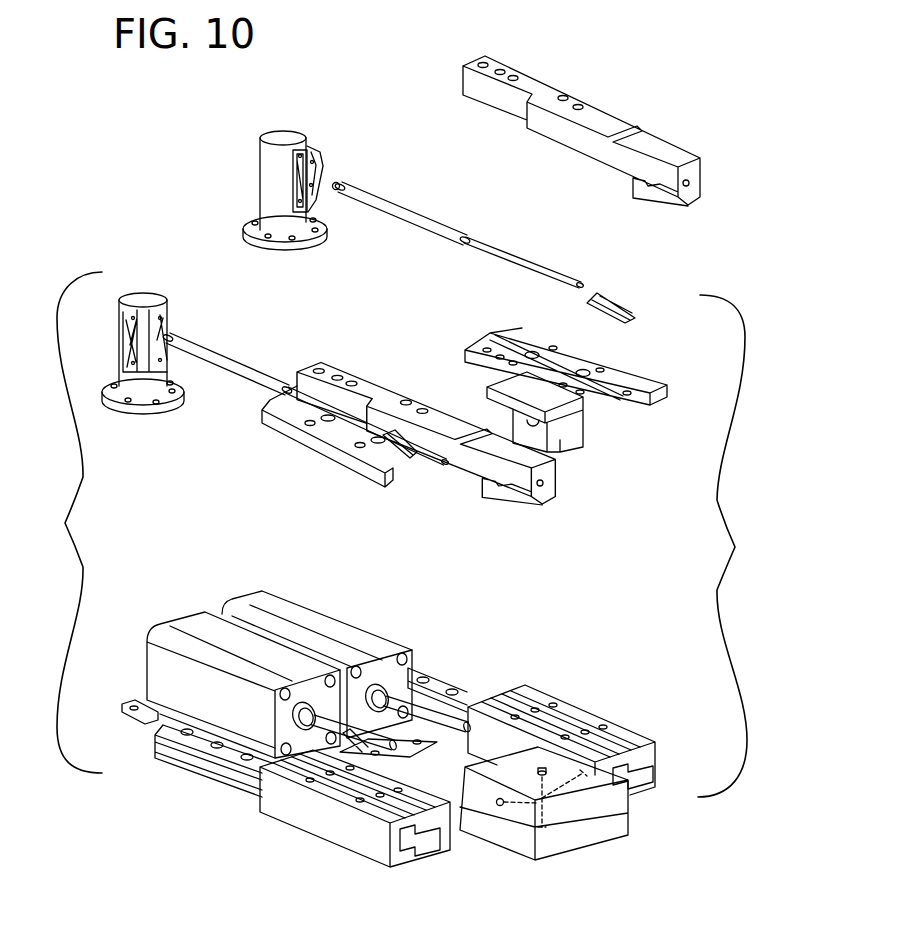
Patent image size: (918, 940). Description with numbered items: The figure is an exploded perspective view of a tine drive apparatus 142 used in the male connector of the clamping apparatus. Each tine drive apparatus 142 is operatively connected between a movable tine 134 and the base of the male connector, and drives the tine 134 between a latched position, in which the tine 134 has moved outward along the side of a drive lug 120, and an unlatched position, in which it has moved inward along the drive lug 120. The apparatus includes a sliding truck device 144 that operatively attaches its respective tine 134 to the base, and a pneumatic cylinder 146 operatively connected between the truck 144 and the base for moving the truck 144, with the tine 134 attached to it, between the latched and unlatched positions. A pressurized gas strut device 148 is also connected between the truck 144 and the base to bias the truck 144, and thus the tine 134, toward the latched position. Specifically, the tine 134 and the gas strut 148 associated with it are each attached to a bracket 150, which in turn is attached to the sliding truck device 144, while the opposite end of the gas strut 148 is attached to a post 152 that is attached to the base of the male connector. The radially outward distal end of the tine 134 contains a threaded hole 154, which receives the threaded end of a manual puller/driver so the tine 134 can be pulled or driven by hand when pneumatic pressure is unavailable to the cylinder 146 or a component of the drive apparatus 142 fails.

The male drive lug 120 is at (585, 836).
The movable tine 134 is at (672, 160).
The tine drive apparatus 142 is at (408, 534).
The sliding truck device 144 is at (577, 709).
The pneumatic cylinder 146 is at (340, 623).
The pressurized gas strut device 148 is at (433, 223).
The bracket 150 is at (645, 385).
The post 152 is at (272, 166).
The threaded hole 154 is at (700, 183).